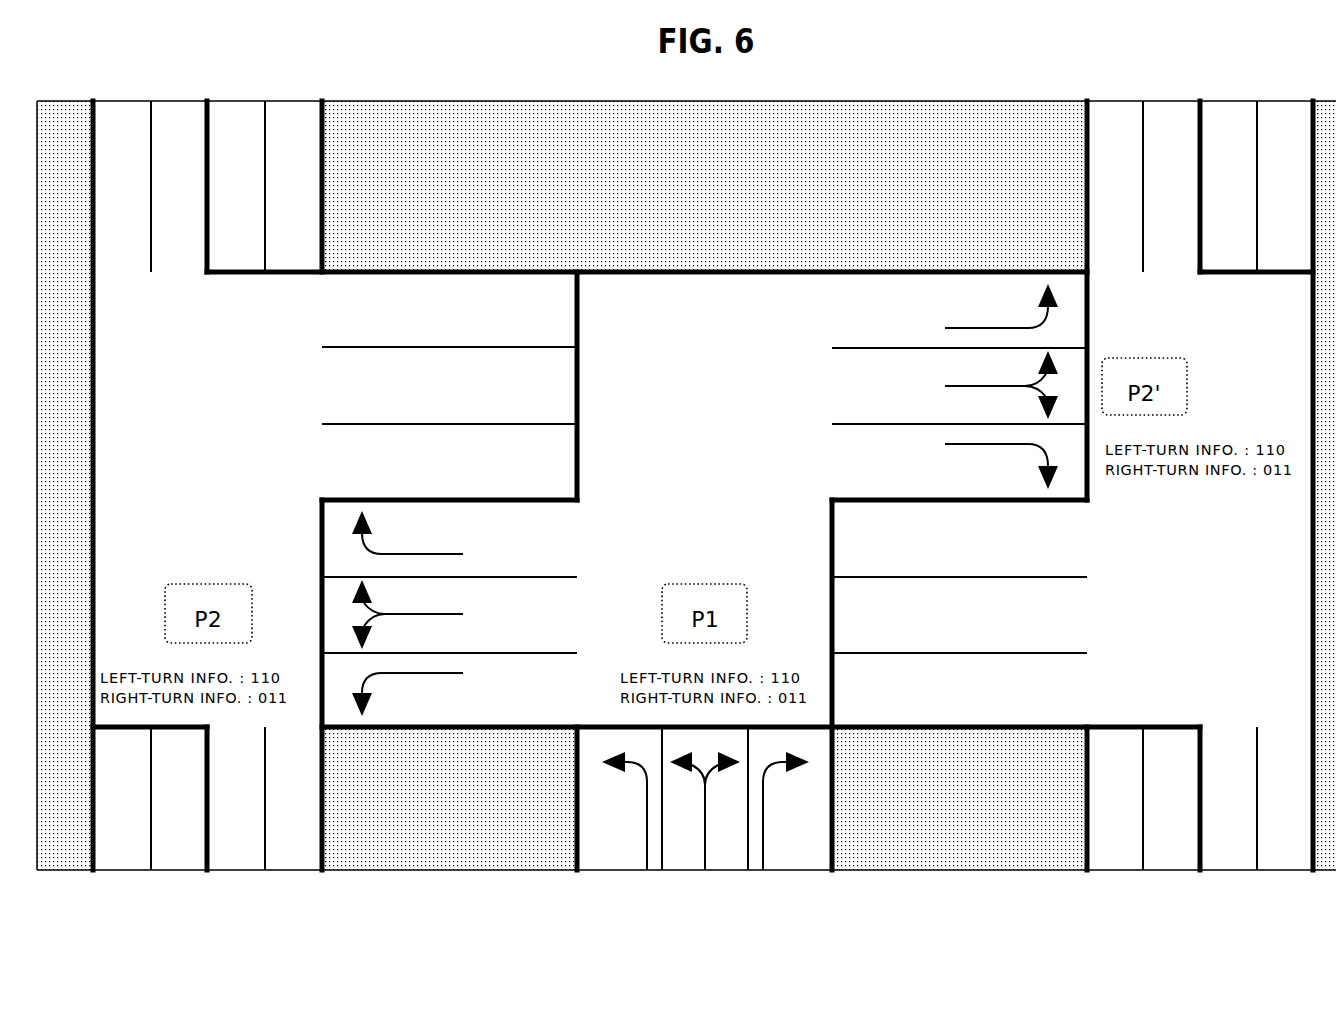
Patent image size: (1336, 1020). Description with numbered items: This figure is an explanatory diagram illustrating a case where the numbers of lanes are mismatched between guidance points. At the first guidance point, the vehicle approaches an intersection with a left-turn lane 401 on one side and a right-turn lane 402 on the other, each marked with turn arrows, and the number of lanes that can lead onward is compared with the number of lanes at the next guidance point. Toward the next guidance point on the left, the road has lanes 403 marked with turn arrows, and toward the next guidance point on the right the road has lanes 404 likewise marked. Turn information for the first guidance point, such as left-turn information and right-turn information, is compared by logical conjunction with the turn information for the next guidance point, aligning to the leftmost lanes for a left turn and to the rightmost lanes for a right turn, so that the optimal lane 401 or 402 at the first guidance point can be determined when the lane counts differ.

The left-turn lane 401 is at (624, 850).
The right-turn lane 402 is at (785, 850).
The lane of road at P2 side 403 is at (545, 663).
The lane of road at P2' side 404 is at (997, 470).